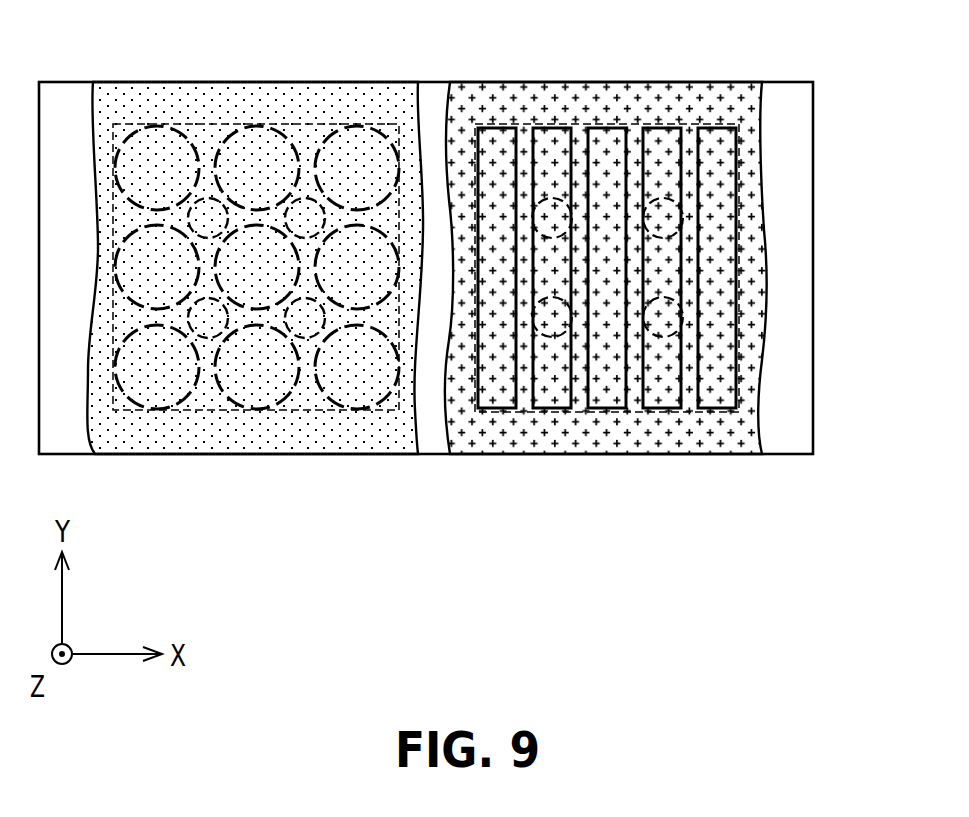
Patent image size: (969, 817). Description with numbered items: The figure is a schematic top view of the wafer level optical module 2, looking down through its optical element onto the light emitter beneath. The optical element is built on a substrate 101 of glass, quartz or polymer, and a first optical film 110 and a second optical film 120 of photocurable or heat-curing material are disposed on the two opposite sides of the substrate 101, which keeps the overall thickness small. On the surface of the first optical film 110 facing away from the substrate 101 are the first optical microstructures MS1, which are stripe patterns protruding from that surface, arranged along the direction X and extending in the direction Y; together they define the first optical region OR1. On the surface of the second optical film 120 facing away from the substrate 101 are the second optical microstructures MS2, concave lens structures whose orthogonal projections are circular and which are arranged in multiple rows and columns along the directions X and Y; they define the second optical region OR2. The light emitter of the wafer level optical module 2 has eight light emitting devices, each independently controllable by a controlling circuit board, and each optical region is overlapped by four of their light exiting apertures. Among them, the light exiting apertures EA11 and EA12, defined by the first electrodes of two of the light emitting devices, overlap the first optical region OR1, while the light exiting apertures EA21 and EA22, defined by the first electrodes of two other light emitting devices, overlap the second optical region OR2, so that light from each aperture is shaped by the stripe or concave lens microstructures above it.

The wafer level optical module 2 is at (892, 592).
The substrate 101 is at (813, 268).
The first optical film 110 is at (624, 267).
The second optical film 120 is at (234, 267).
The first optical region OR1 is at (636, 124).
The second optical region OR2 is at (207, 124).
The first optical microstructures MS1 is at (552, 128).
The second optical microstructures MS2 is at (258, 268).
The light exiting aperture EA11 is at (552, 337).
The light exiting aperture EA12 is at (663, 337).
The light exiting aperture EA21 is at (183, 333).
The light exiting aperture EA22 is at (327, 328).